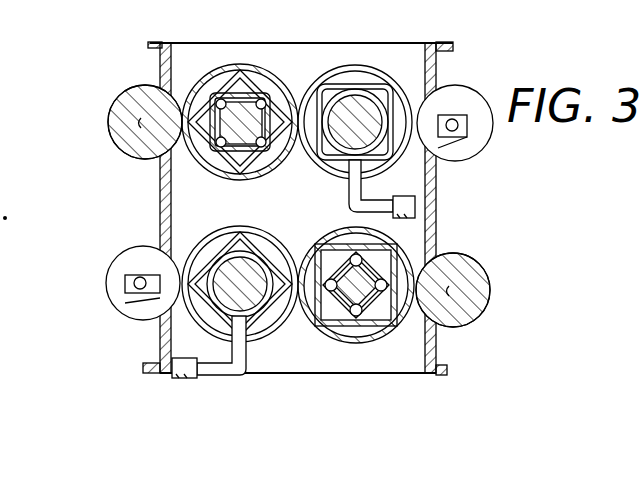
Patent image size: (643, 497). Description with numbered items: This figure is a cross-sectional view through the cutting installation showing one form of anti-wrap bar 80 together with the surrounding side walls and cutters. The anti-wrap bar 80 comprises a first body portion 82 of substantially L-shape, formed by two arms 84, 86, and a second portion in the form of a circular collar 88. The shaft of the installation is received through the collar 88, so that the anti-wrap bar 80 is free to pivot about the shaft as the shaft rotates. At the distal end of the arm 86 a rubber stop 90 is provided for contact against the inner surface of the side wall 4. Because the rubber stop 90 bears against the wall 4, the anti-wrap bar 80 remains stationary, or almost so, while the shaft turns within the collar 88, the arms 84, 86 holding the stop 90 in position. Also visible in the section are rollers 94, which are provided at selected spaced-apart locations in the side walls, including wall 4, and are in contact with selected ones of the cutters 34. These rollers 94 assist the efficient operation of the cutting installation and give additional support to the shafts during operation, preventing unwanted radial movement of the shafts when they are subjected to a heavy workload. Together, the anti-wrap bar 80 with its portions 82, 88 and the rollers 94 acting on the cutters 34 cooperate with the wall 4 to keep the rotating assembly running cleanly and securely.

The wall 4 is at (167, 62).
The cutter 34 is at (440, 340).
The anti-wrap bar 80 is at (380, 193).
The first body portion 82 is at (389, 60).
The arm 84 is at (353, 206).
The arm 86 is at (425, 243).
The circular collar 88 is at (343, 92).
The rubber stop 90 is at (418, 207).
The roller 94 is at (123, 110).